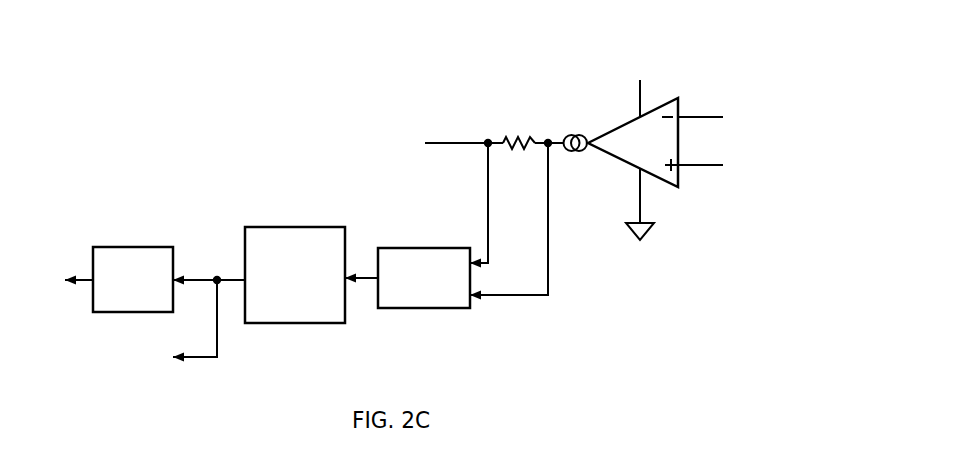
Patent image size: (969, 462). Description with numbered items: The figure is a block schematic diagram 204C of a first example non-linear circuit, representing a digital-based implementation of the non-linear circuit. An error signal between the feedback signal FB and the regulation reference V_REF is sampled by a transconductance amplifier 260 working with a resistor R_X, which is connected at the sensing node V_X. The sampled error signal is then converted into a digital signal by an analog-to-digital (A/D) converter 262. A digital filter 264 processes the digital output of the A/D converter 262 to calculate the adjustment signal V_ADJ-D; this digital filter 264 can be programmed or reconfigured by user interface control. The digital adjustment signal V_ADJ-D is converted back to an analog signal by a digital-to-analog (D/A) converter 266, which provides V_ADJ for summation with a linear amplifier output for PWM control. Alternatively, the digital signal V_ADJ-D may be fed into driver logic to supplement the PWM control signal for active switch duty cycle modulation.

The block schematic diagram 204C is at (202, 57).
The transconductance amplifier 260 is at (614, 148).
The analog-to-digital (A/D) converter 262 is at (443, 304).
The digital filter 264 is at (313, 312).
The digital-to-analog (D/A) converter 266 is at (153, 304).